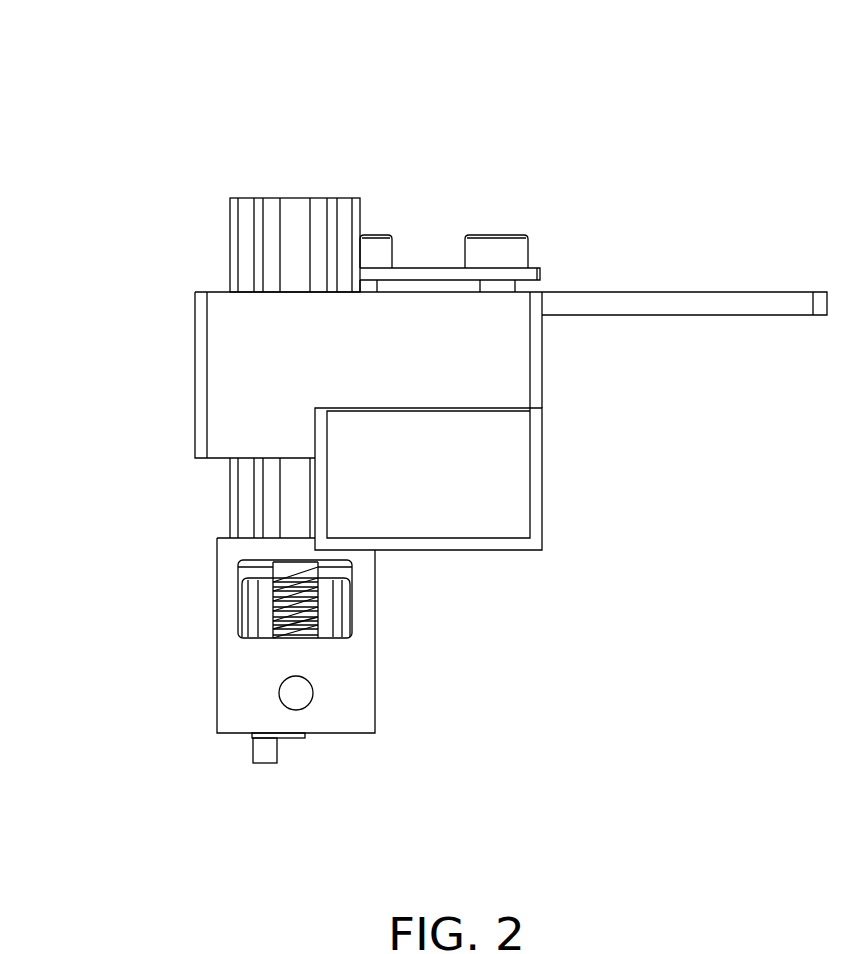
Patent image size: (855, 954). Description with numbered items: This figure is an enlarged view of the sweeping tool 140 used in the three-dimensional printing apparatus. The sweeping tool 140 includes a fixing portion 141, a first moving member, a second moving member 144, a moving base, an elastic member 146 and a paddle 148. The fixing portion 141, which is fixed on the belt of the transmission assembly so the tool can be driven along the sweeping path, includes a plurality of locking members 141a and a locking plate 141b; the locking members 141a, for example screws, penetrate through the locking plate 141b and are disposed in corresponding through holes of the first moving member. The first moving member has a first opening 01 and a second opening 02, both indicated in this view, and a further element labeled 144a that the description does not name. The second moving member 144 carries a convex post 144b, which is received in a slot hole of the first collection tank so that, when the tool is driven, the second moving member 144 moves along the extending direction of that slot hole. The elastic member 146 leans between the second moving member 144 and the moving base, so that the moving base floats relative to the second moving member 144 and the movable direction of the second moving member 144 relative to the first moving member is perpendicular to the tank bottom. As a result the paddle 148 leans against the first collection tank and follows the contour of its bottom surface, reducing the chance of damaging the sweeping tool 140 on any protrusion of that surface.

The sweeping tool 140 is at (202, 125).
The second opening 02 is at (212, 278).
The first opening 01 is at (548, 473).
The shaft 144a is at (295, 227).
The fixing portion 141 is at (743, 17).
The locking members 141a is at (497, 250).
The locking plate 141b is at (542, 277).
The second moving member 144 is at (232, 686).
The convex post 144b is at (298, 693).
The elastic member 146 is at (287, 573).
The paddle 148 is at (267, 753).